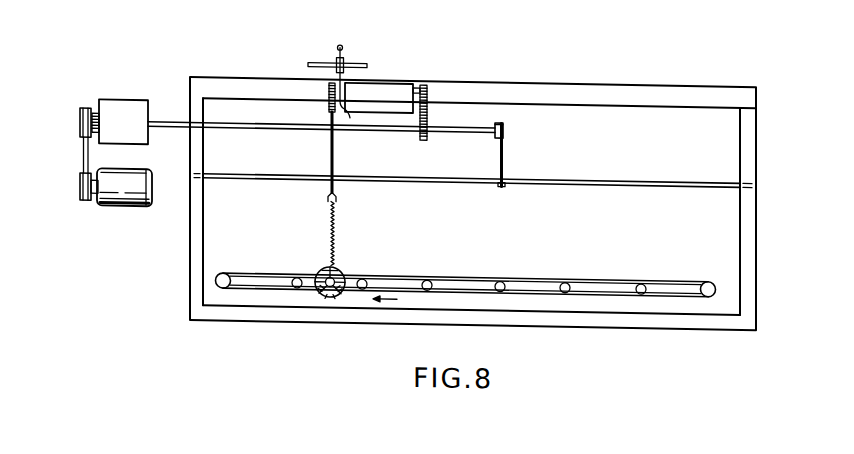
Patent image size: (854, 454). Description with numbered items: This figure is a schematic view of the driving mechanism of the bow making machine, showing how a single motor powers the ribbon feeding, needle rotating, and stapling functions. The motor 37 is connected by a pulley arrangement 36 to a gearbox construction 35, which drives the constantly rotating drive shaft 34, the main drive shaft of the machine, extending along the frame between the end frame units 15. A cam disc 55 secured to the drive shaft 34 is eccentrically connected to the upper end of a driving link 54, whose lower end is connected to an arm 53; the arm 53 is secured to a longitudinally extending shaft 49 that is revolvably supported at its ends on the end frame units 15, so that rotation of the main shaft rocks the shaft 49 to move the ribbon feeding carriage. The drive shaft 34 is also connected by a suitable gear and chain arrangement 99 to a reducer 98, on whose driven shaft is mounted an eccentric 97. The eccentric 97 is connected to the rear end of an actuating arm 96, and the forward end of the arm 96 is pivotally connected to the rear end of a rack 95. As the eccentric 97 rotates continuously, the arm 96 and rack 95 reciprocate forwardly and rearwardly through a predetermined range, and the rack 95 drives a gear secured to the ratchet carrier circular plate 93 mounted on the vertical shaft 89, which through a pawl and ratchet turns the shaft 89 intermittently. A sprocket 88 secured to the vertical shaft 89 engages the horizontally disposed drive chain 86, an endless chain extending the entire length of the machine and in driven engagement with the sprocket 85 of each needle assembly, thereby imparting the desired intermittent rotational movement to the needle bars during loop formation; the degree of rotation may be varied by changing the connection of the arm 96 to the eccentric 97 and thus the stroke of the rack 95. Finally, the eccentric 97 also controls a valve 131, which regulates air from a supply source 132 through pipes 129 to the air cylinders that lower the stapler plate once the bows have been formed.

The end frame units 15 is at (190, 243).
The drive shaft 34 is at (165, 121).
The gearbox construction 35 is at (121, 101).
The pulley arrangement 36 is at (78, 149).
The motor 37 is at (113, 209).
The shaft 49 is at (278, 174).
The arm 53 is at (507, 152).
The driving link 54 is at (507, 128).
The cam disc 55 is at (503, 113).
The sprocket 85 is at (223, 272).
The drive chain 86 is at (403, 272).
The sprocket 88 is at (339, 269).
The vertical shaft 89 is at (325, 295).
The circular plate 93 is at (333, 294).
The rack 95 is at (334, 230).
The actuating arm 96 is at (330, 150).
The eccentric 97 is at (350, 115).
The reducer 98 is at (393, 81).
The gear and chain arrangement 99 is at (433, 103).
The pipes 129 is at (312, 61).
The valve 131 is at (337, 54).
The supply source 132 is at (343, 48).